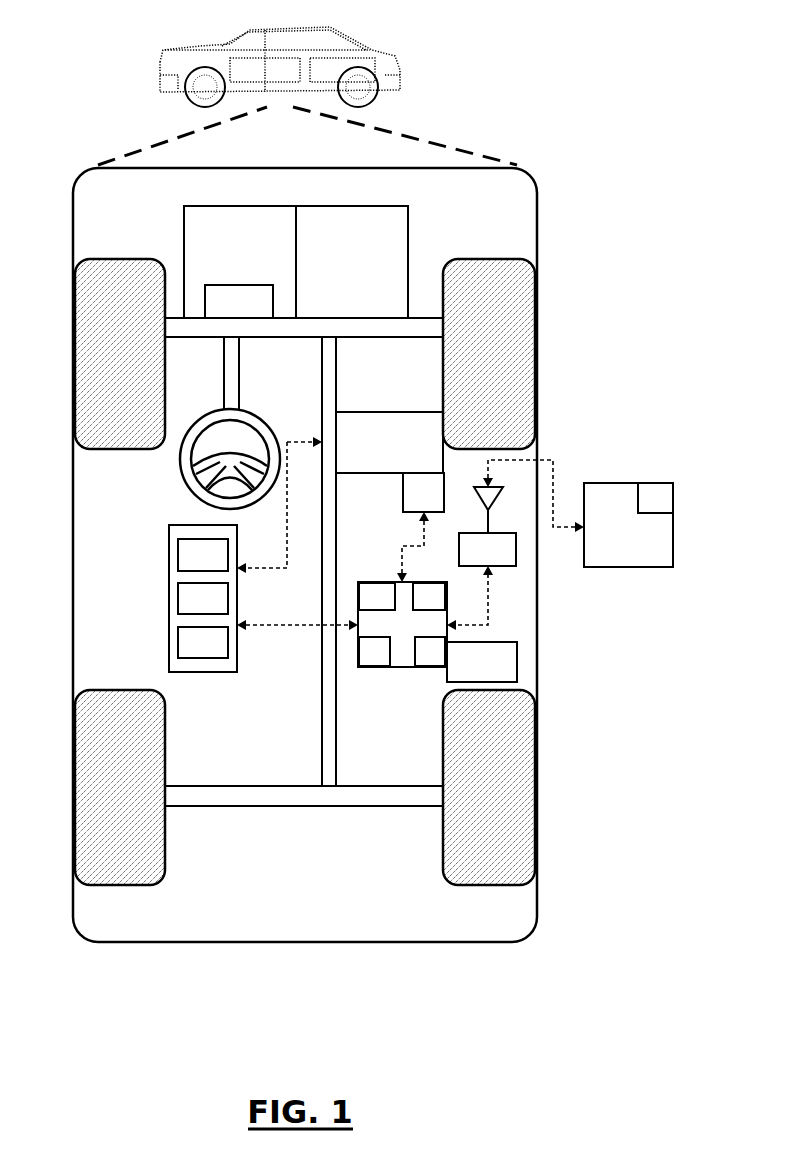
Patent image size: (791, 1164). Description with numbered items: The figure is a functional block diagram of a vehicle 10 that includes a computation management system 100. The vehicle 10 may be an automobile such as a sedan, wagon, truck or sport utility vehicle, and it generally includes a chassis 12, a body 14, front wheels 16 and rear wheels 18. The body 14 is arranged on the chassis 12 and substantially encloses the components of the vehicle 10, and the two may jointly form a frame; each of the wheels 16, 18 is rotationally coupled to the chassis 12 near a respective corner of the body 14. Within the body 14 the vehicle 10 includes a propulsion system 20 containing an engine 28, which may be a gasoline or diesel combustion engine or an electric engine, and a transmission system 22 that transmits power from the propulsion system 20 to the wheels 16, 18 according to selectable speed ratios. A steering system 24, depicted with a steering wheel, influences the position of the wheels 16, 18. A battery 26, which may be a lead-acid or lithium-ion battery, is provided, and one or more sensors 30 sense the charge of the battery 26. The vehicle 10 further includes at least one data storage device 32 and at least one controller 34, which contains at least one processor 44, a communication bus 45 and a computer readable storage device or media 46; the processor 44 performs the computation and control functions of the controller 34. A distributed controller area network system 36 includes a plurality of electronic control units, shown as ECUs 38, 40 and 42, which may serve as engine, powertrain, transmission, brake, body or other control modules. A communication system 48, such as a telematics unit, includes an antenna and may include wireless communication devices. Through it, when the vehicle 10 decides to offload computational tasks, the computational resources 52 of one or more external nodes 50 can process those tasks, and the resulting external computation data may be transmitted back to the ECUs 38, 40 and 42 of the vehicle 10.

The vehicle 10 is at (400, 66).
The computation management system 100 is at (584, 246).
The chassis 12 is at (322, 720).
The body 14 is at (73, 650).
The front wheels 16 is at (123, 258).
The rear wheels 18 is at (137, 885).
The propulsion system 20 is at (228, 271).
The transmission system 22 is at (340, 271).
The steering system 24 is at (239, 408).
The battery 26 is at (378, 454).
The engine 28 is at (227, 312).
The sensors 30 is at (412, 503).
The data storage device 32 is at (469, 673).
The controller 34 is at (390, 635).
The distributed controller area network (CAN) system 36 is at (169, 595).
The electronic control unit 38 is at (191, 566).
The electronic control unit 40 is at (191, 610).
The electronic control unit 42 is at (191, 654).
The processor 44 is at (419, 606).
The communication bus 45 is at (367, 606).
The computer readable storage device or media 46 is at (420, 661).
The communication system 48 is at (476, 560).
The external nodes 50 is at (616, 538).
The computational resources 52 is at (646, 508).